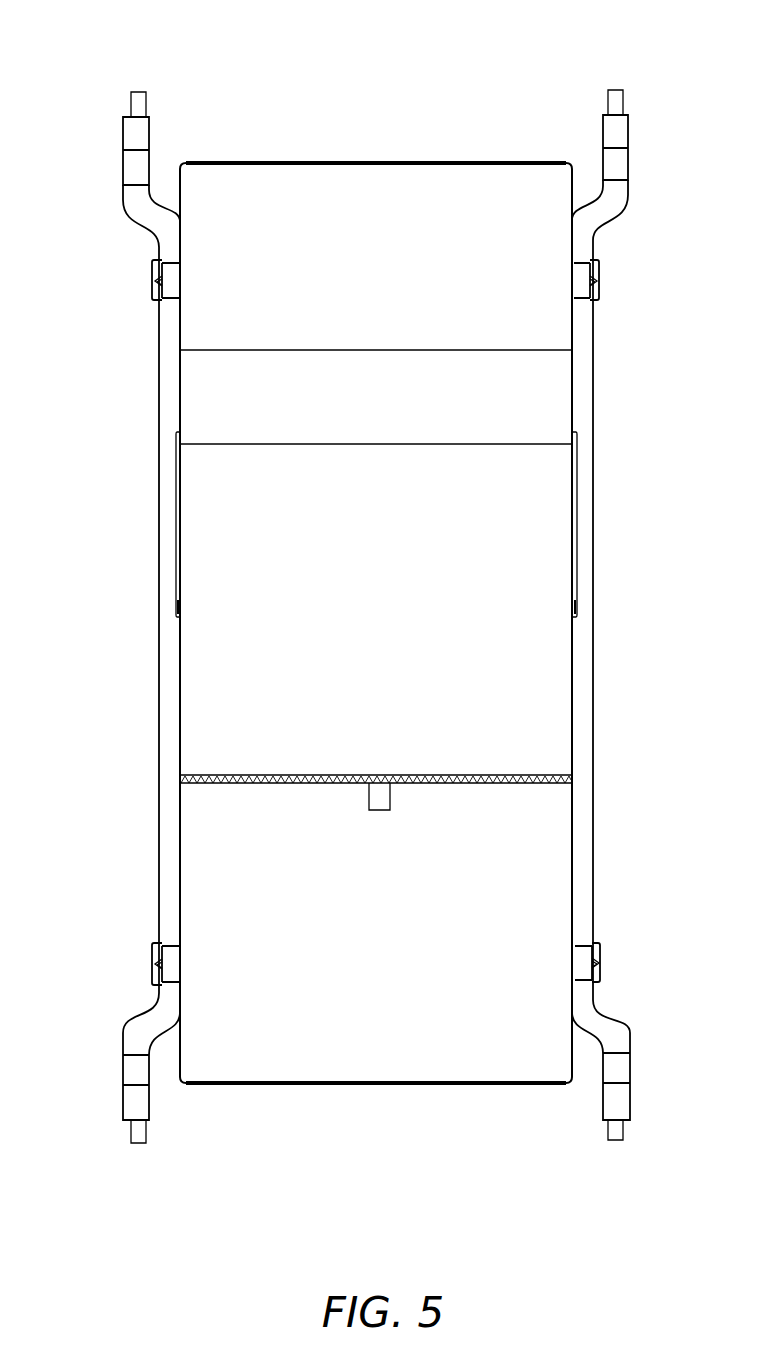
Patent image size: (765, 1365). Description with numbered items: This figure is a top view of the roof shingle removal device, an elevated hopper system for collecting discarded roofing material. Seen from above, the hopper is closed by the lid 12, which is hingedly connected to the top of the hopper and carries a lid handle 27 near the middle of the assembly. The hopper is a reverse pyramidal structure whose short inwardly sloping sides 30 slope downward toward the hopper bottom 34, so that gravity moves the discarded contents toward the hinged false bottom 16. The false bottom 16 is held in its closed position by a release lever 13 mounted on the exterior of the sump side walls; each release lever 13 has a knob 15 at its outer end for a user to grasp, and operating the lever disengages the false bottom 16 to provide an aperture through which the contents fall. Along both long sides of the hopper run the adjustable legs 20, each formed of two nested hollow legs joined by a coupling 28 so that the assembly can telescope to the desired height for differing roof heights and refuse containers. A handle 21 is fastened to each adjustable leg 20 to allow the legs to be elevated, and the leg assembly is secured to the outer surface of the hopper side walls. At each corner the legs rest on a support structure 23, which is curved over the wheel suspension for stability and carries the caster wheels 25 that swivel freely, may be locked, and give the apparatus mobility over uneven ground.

The lid 12 is at (392, 1065).
The release lever 13 is at (178, 542).
The knob 15 is at (181, 608).
The false bottom 16 is at (537, 497).
The adjustable legs 20 is at (172, 283).
The handle 21 is at (155, 285).
The support structure 23 is at (162, 697).
The caster wheels 25 is at (140, 100).
The lid handle 27 is at (380, 800).
The coupling 28 is at (152, 268).
The short inwardly sloping sides 30 is at (408, 204).
The hopper bottom 34 is at (431, 373).